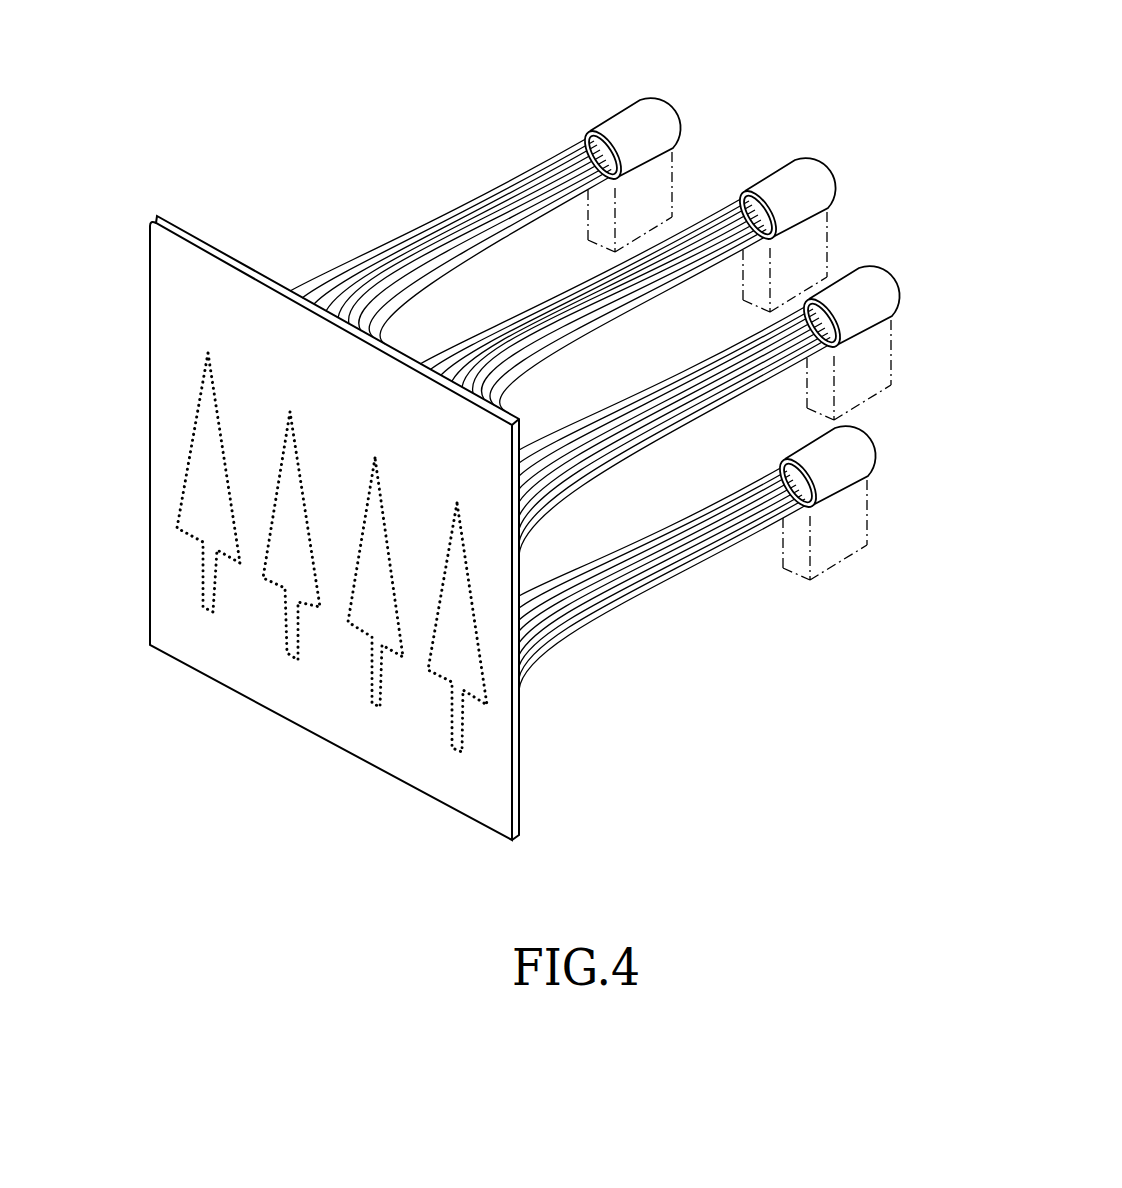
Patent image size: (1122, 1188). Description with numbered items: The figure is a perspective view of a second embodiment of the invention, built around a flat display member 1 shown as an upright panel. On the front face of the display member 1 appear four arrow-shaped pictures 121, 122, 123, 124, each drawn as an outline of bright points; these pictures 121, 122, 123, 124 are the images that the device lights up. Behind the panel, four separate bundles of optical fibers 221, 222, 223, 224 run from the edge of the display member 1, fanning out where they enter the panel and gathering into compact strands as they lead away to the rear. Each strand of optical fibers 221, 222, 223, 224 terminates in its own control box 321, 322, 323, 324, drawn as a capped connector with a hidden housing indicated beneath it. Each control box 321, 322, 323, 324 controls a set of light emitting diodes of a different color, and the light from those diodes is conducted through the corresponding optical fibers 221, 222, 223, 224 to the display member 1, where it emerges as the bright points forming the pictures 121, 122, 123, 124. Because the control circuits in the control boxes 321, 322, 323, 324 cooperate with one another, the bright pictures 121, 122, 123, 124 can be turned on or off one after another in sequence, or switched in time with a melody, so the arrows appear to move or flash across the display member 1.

The display member 1 is at (497, 762).
The picture 121 is at (200, 483).
The picture 122 is at (278, 595).
The picture 123 is at (365, 652).
The picture 124 is at (448, 727).
The optical fibers 221 is at (433, 250).
The optical fibers 222 is at (540, 337).
The optical fibers 223 is at (643, 425).
The optical fibers 224 is at (661, 557).
The control box 321 is at (650, 123).
The control box 322 is at (803, 178).
The control box 323 is at (877, 300).
The control box 324 is at (847, 461).